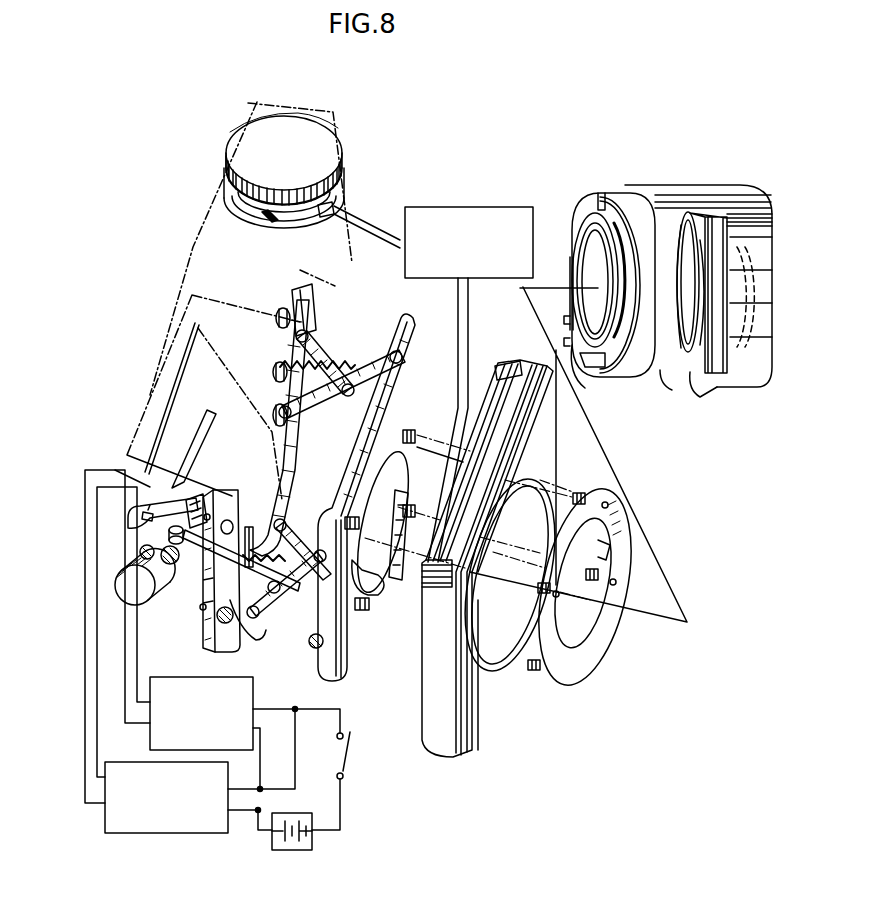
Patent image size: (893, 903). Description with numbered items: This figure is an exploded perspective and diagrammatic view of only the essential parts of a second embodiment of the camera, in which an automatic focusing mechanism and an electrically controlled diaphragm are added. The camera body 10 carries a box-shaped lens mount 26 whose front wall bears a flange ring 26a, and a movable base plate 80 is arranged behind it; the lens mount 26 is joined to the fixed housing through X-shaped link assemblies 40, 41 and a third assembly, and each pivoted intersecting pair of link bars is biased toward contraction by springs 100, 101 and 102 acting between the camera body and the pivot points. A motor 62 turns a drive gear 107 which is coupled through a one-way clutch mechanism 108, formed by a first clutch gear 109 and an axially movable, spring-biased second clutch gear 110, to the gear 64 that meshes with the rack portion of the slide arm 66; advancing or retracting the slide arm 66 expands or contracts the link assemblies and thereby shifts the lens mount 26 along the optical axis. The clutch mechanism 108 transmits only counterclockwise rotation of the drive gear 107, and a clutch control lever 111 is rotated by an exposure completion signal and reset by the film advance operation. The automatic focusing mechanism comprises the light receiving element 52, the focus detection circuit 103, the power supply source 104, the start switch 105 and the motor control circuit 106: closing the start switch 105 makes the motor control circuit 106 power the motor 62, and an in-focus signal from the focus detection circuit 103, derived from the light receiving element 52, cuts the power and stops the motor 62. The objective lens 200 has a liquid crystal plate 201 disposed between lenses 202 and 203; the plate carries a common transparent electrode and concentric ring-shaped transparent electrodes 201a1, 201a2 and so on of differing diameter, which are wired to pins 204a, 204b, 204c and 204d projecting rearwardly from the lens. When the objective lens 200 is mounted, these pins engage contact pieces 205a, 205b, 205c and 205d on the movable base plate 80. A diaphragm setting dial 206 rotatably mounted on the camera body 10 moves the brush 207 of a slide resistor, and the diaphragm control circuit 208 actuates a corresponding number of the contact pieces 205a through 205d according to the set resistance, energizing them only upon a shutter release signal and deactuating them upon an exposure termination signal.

The camera body 10 is at (215, 212).
The diaphragm setting dial 206 is at (271, 167).
The brush 207 is at (283, 222).
The diaphragm control circuit 208 is at (462, 205).
The lens 203 is at (592, 252).
The objective lens 200 is at (668, 185).
The liquid crystal plate 201 is at (703, 240).
The lens 202 is at (760, 374).
The ring-shaped transparent electrode 201a1 is at (743, 322).
The ring-shaped transparent electrode 201a2 is at (682, 350).
The pin 204a is at (565, 320).
The pin 204b is at (562, 343).
The pin 204c is at (563, 355).
The pin 204d is at (598, 368).
The link assembly 41 is at (318, 297).
The spring 101 is at (318, 358).
The movable base plate 80 is at (412, 355).
The spring 102 is at (302, 432).
The light receiving element 52 is at (190, 488).
The slide arm 66 is at (207, 496).
The gear 64 is at (175, 512).
The clutch control lever 111 is at (137, 517).
The first clutch gear 109 is at (160, 540).
The motor 62 is at (115, 592).
The drive gear 107 is at (157, 600).
The one-way clutch mechanism 108 is at (183, 568).
The second clutch gear 110 is at (194, 579).
The spring 100 is at (240, 612).
The link assembly 40 is at (300, 620).
The motor control circuit 106 is at (255, 688).
The start switch 105 is at (348, 760).
The power supply source 104 is at (310, 845).
The focus detection circuit 103 is at (160, 835).
The lens mount 26 is at (472, 737).
The flange ring 26a is at (617, 558).
The contact piece 205a is at (445, 600).
The contact piece 205b is at (435, 562).
The contact piece 205c is at (428, 640).
The contact piece 205d is at (432, 600).